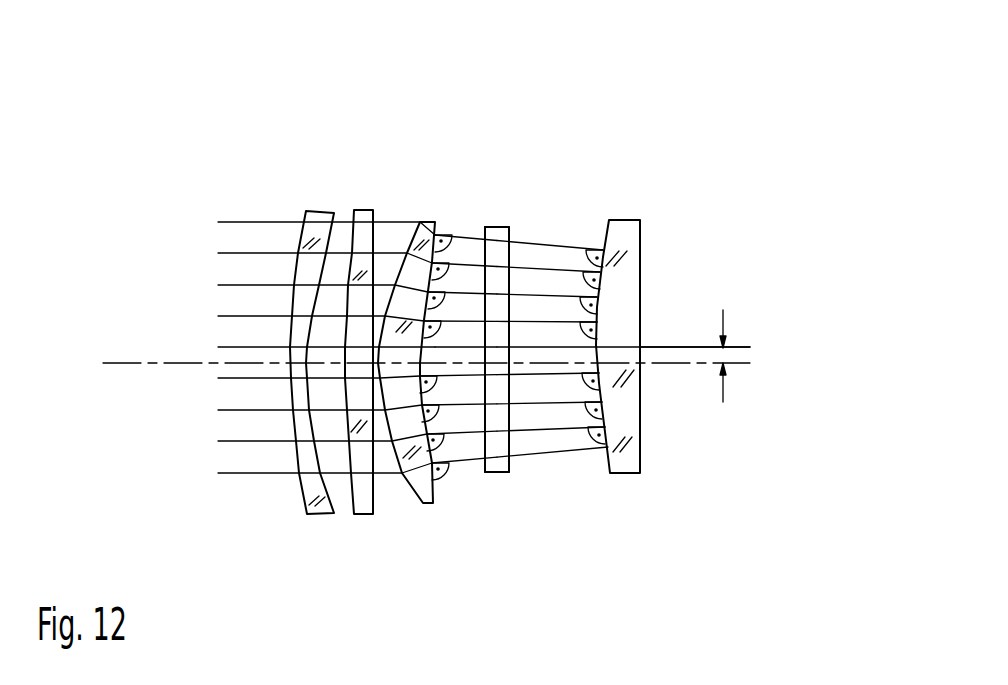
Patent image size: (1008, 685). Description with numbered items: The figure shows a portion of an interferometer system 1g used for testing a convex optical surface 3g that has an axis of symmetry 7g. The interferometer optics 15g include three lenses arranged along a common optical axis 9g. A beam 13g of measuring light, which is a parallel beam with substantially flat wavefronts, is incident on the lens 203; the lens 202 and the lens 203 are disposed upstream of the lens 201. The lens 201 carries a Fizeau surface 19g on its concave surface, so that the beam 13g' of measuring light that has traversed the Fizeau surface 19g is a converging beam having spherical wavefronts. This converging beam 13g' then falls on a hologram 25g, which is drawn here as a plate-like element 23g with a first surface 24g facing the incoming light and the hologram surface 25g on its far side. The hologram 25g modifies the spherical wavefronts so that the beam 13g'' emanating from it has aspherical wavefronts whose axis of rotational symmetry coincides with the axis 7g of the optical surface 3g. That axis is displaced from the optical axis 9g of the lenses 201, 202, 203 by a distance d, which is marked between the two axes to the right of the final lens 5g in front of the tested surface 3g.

The interferometer system 1g is at (260, 114).
The interferometer optics 15g is at (581, 114).
The beam 13g is at (324, 314).
The beam of measuring light 13g' is at (458, 318).
The beam 13g'' is at (623, 318).
The lens 203 is at (317, 210).
The lens 202 is at (363, 210).
The lens 201 is at (430, 220).
The Fizeau surface 19g is at (438, 490).
The plane-parallel plate 23g is at (498, 226).
The first plate surface 24g is at (475, 473).
The hologram 25g is at (515, 473).
The lens 5g is at (630, 219).
The convex optical surface 3g is at (607, 230).
The axis of symmetry 7g is at (740, 348).
The optical axis 9g is at (127, 363).
The distance d is at (717, 359).